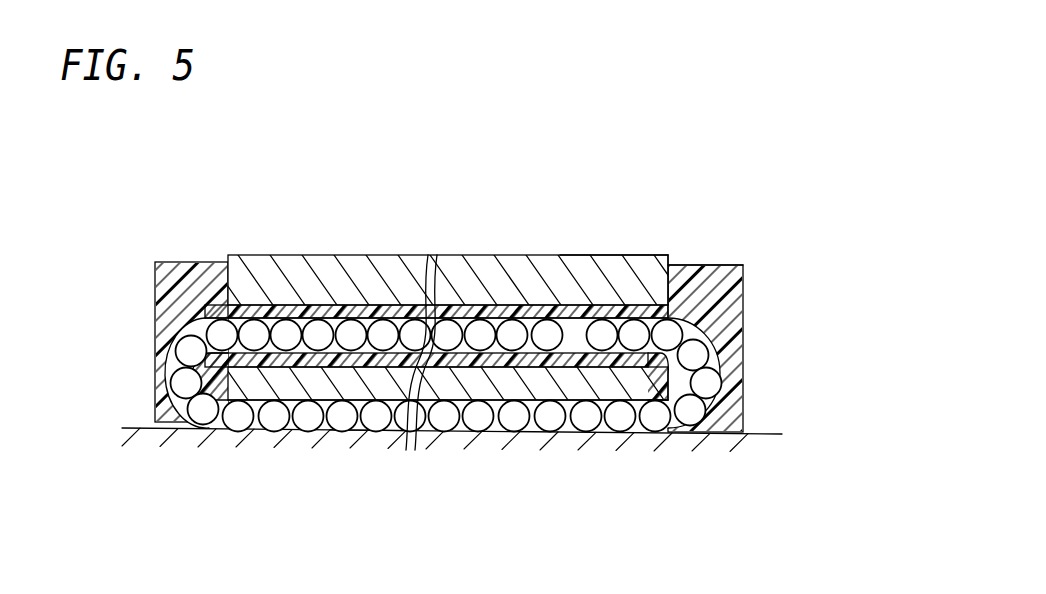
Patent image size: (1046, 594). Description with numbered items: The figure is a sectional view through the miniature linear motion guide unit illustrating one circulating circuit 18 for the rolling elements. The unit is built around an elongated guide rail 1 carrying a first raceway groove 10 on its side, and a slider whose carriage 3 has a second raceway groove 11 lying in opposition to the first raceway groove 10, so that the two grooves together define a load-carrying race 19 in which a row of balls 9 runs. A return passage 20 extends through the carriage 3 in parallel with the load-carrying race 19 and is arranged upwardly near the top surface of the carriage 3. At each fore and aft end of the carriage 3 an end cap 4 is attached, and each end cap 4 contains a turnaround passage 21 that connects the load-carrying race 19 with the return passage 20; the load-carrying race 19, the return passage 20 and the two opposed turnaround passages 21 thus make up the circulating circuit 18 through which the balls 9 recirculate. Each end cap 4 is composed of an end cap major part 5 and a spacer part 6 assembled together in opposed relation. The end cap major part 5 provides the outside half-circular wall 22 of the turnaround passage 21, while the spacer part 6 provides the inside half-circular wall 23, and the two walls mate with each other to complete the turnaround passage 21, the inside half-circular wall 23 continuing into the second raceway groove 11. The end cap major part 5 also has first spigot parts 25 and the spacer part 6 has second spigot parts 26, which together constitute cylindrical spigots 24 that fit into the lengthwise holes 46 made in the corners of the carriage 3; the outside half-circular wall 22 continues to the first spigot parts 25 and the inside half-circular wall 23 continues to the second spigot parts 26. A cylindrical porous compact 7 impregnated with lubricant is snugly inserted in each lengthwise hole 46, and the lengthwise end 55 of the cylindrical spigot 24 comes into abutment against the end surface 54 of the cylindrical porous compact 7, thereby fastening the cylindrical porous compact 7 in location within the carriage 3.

The guide rail 1 is at (455, 440).
The carriage 3 is at (441, 272).
The end cap 4 is at (450, 339).
The end cap major part 5 is at (169, 400).
The spacer part 6 is at (210, 418).
The cylindrical porous compact 7 is at (503, 313).
The ball 9 is at (645, 433).
The first raceway groove 10 is at (513, 420).
The second raceway groove 11 is at (370, 432).
The circulating circuit 18 is at (450, 339).
The load-carrying race 19 is at (298, 400).
The return passage 20 is at (363, 300).
The turnaround passage 21 is at (209, 262).
The outside half-circular wall 22 is at (200, 386).
The inside half-circular wall 23 is at (180, 392).
The cylindrical spigot 24 is at (458, 365).
The first spigot part 25 is at (238, 312).
The second spigot part 26 is at (253, 365).
The lengthwise hole 46 is at (583, 303).
The end surface 54 is at (690, 308).
The lengthwise end 55 is at (636, 300).